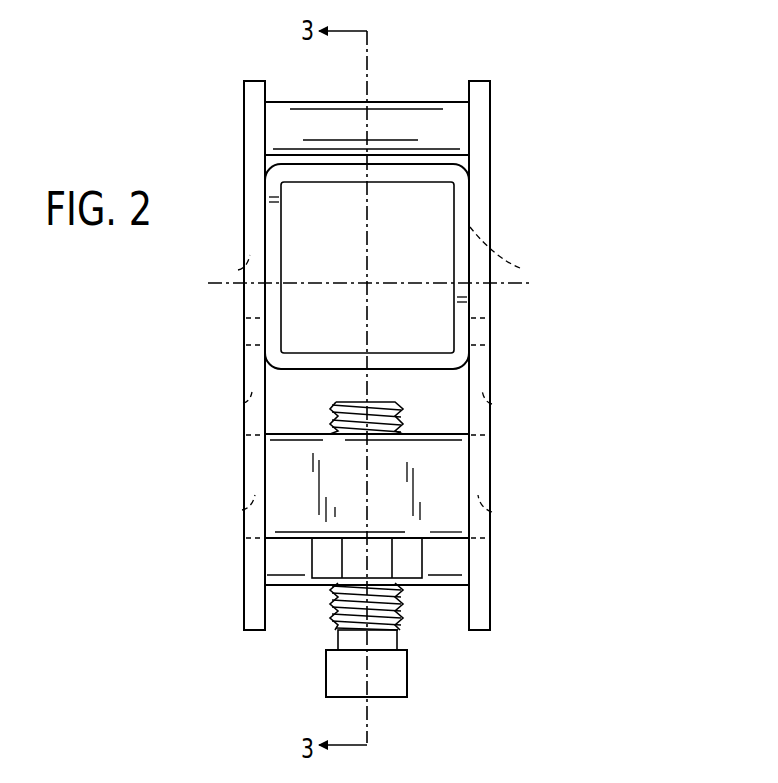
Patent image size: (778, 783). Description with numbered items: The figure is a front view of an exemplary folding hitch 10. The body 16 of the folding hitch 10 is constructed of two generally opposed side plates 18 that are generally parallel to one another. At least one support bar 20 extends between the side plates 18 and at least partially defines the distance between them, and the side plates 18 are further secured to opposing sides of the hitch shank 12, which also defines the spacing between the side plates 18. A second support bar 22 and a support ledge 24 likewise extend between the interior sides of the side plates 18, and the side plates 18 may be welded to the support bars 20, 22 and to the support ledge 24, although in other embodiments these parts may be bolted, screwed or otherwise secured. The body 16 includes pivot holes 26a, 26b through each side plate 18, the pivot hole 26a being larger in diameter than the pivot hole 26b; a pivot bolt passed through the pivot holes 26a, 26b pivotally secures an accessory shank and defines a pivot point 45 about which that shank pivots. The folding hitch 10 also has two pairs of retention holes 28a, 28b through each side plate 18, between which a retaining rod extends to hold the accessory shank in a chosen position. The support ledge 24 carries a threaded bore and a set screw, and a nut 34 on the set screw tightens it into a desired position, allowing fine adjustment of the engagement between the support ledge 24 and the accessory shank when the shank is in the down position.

The folding hitch 10 is at (640, 76).
The hitch shank 12 is at (459, 210).
The body 16 is at (502, 96).
The side plates 18 is at (251, 135).
The support bar 20 is at (409, 112).
The second support bar 22 is at (447, 565).
The support ledge 24 is at (445, 467).
The pivot hole 26a is at (520, 268).
The pivot hole 26b is at (238, 270).
The retention holes 28a is at (242, 510).
The retention holes 28b is at (243, 403).
The nut 34 is at (327, 562).
The pivot point 45 is at (418, 283).